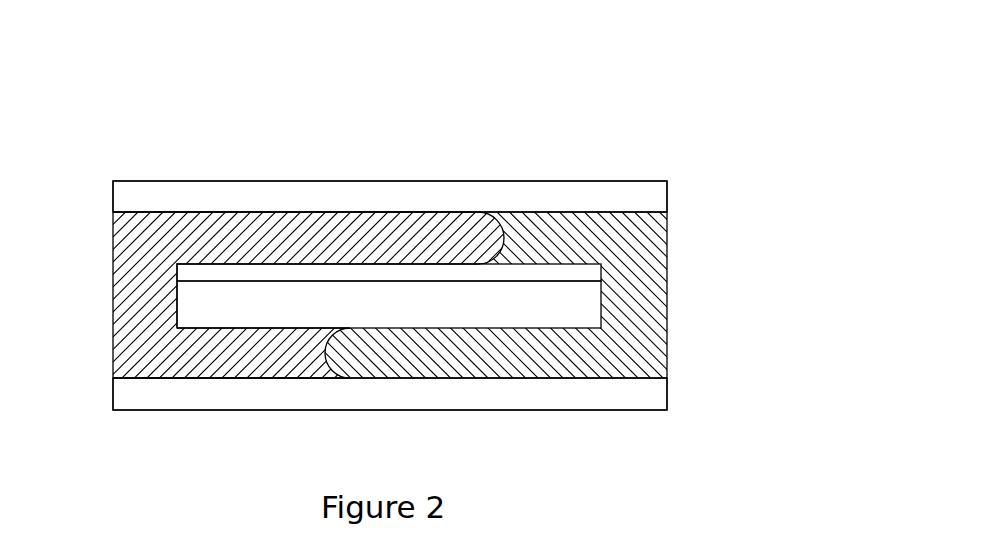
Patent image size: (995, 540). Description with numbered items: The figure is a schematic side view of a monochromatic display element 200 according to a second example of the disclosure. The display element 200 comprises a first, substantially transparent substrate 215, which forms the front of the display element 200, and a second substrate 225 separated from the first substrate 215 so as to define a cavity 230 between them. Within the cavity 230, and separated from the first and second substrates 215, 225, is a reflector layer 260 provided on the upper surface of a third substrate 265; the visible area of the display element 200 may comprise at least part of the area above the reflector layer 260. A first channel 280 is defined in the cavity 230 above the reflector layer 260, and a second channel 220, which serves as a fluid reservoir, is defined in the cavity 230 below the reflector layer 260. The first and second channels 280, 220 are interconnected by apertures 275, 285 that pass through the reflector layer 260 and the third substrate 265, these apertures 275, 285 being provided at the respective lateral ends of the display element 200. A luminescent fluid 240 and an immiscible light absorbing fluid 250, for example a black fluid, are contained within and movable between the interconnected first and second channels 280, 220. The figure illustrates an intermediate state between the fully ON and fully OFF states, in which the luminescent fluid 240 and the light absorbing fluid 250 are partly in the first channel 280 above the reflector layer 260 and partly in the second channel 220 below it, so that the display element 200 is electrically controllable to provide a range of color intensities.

The display element 200 is at (98, 93).
The first substrate 215 is at (627, 193).
The second channel 220 is at (445, 363).
The second substrate 225 is at (630, 404).
The cavity 230 is at (639, 358).
The luminescent fluid 240 is at (243, 363).
The light absorbing fluid 250 is at (574, 358).
The reflector layer 260 is at (598, 276).
The third substrate 265 is at (598, 308).
The aperture 275 is at (143, 298).
The first channel 280 is at (522, 238).
The aperture 285 is at (642, 265).